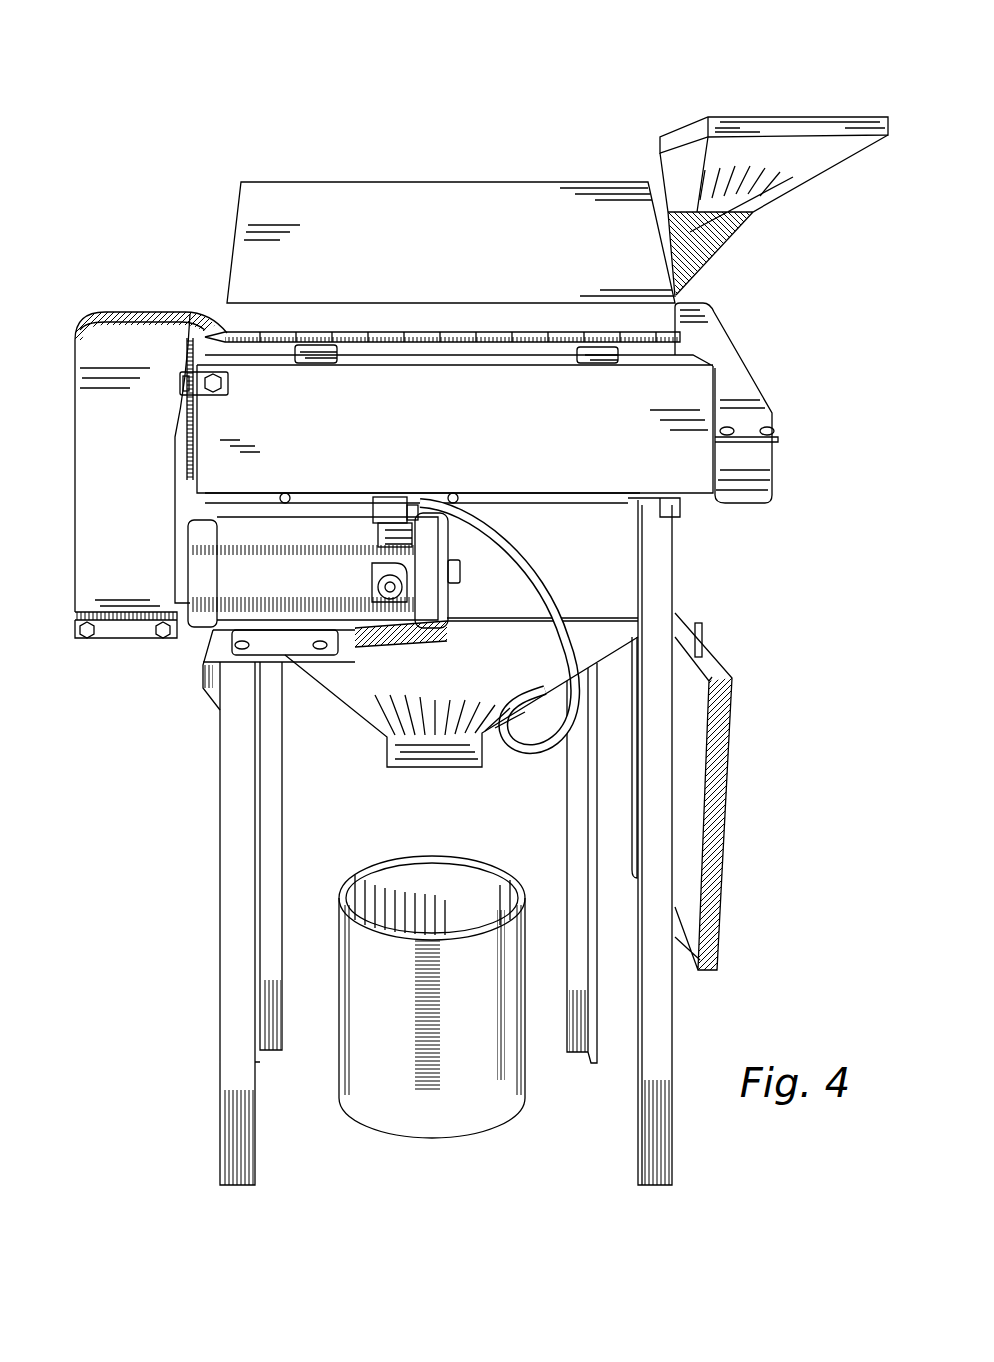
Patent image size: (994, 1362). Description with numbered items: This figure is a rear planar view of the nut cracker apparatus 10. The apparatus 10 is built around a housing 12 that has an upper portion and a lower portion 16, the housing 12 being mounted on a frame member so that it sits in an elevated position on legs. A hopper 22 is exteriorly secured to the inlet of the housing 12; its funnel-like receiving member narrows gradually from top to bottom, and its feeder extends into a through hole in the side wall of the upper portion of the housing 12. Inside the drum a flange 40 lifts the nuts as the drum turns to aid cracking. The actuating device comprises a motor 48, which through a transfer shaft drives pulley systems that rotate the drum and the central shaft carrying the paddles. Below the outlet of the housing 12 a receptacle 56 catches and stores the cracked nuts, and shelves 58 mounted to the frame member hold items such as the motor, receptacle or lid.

The nut cracker apparatus 10 is at (138, 112).
The housing 12 is at (624, 553).
The lower portion 16 is at (363, 705).
The hopper 22 is at (795, 118).
The flange 40 is at (102, 527).
The motor 48 is at (207, 597).
The receptacle 56 is at (473, 1110).
The shelves 58 is at (203, 688).